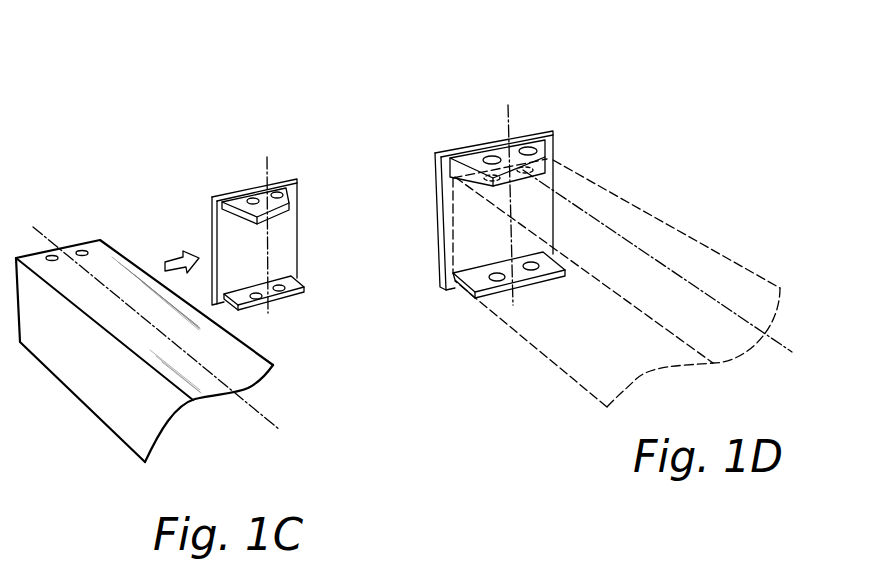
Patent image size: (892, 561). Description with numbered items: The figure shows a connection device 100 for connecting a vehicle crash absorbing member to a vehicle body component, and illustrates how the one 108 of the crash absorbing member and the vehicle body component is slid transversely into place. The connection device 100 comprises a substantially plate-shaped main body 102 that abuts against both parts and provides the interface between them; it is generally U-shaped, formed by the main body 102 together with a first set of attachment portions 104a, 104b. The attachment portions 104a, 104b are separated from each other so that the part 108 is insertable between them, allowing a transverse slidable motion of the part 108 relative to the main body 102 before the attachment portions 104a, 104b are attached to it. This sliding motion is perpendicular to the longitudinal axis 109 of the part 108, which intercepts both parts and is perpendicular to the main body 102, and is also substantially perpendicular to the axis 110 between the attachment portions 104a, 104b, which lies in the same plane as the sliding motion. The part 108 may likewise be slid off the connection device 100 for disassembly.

In FIG. 1C, the connection device 100 is at (262, 106).
In FIG. 1D, the connection device 100 is at (497, 98).
In FIG. 1C, the main body 102 is at (261, 251).
In FIG. 1D, the main body 102 is at (553, 145).
In FIG. 1C, the attachment portion 104a is at (296, 287).
In FIG. 1D, the attachment portion 104a is at (442, 287).
In FIG. 1C, the attachment portion 104b is at (295, 182).
In FIG. 1D, the attachment portion 104b is at (437, 153).
In FIG. 1C, the one of the crash absorbing member and the vehicle body component 108 is at (103, 267).
In FIG. 1D, the one of the crash absorbing member and the vehicle body component 108 is at (647, 232).
In FIG. 1C, the longitudinal axis 109 is at (257, 408).
In FIG. 1D, the longitudinal axis 109 is at (677, 283).
In FIG. 1C, the axis between the attachment portions 110 is at (267, 180).
In FIG. 1D, the axis between the attachment portions 110 is at (507, 127).